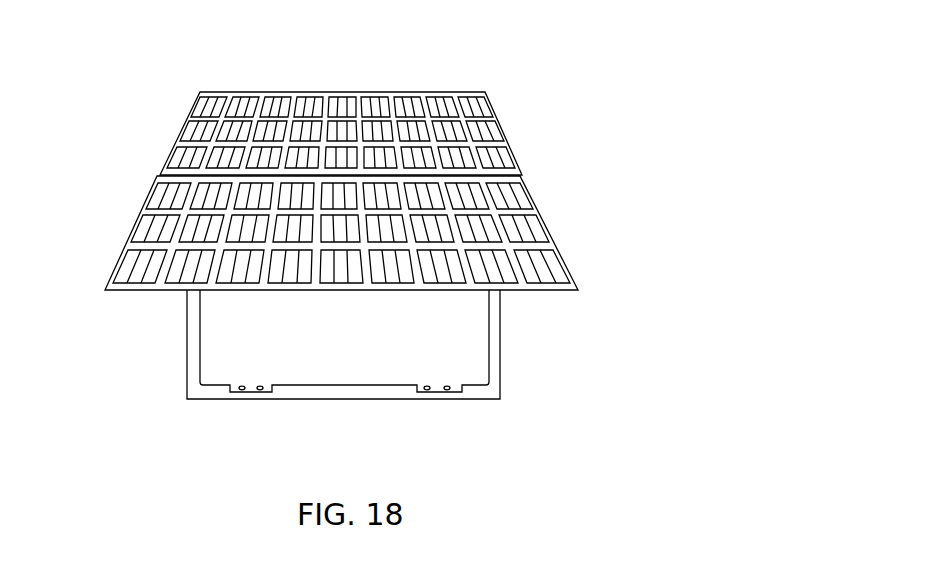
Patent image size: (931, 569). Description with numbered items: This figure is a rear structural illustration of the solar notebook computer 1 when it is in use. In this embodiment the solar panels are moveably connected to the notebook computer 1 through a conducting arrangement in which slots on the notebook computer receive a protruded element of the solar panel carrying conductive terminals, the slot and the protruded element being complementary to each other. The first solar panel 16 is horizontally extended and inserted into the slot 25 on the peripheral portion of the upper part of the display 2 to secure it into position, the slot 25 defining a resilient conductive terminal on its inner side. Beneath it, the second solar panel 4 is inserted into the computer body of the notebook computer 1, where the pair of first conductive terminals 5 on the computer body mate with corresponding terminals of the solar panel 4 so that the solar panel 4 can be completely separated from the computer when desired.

The notebook computer 1 is at (172, 387).
The display 2 is at (462, 337).
The solar panel 4 is at (133, 231).
The first conductive terminals 5 is at (232, 380).
The first solar panel 16 is at (194, 114).
The slot 25 is at (251, 172).